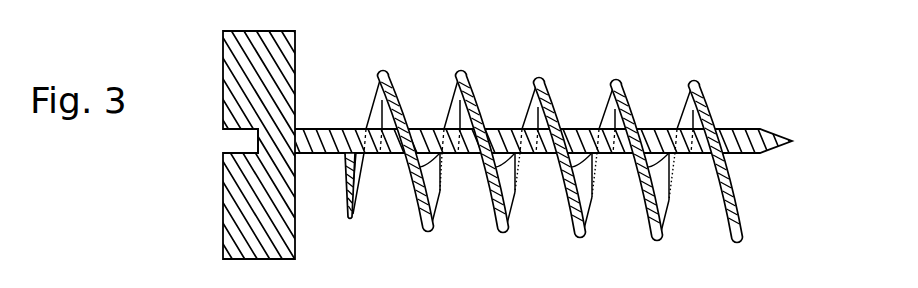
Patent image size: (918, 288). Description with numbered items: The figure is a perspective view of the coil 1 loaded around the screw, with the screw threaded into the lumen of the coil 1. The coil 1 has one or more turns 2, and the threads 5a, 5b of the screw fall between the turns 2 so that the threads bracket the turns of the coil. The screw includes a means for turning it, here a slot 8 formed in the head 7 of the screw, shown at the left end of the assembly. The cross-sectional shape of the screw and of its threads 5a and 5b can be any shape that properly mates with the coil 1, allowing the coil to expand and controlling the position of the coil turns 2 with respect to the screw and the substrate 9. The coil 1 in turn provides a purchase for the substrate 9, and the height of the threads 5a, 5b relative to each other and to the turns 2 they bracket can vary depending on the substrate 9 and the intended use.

The coil 1 is at (567, 148).
The turns 2 is at (544, 148).
The thread 5a is at (446, 107).
The thread 5b is at (531, 200).
The head 7 is at (318, 232).
The slot 8 is at (210, 147).
The substrate 9 is at (116, 283).